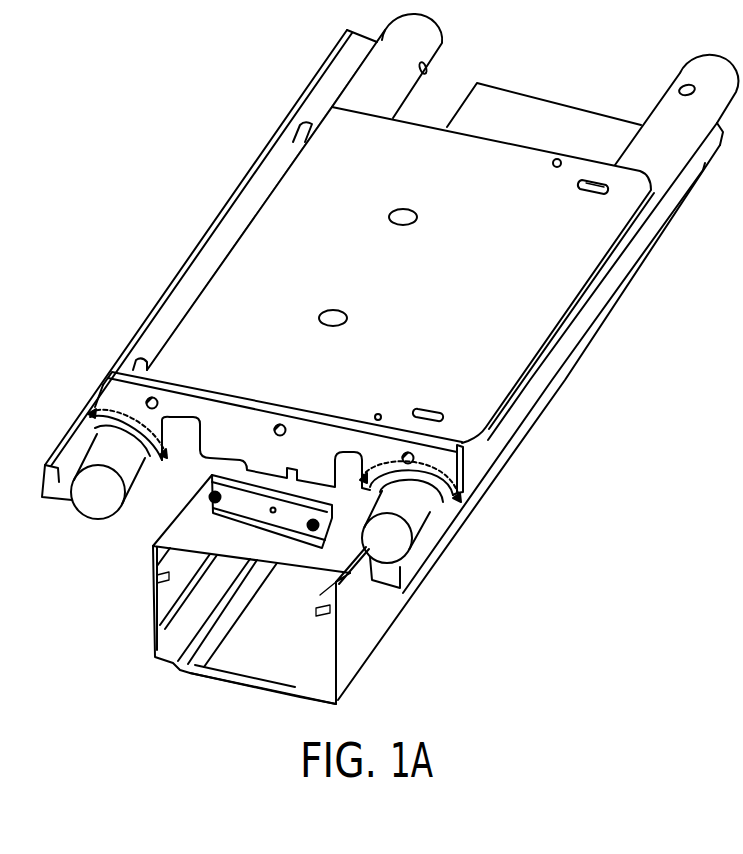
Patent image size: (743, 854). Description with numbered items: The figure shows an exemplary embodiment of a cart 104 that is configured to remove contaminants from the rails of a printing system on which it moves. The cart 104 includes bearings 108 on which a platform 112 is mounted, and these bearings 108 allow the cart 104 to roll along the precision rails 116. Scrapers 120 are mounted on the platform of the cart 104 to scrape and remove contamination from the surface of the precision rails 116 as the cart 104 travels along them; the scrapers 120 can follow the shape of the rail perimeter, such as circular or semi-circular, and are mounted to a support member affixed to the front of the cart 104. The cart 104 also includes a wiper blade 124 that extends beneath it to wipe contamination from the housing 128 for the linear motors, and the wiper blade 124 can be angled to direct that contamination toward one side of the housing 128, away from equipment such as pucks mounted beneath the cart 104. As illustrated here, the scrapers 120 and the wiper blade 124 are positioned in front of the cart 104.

The cart 104 is at (287, 191).
The bearings 108 is at (294, 142).
The platform 112 is at (600, 253).
The precision rails 116 is at (90, 500).
The scrapers 120 is at (455, 515).
The wiper blade 124 is at (235, 523).
The housing 128 is at (240, 668).